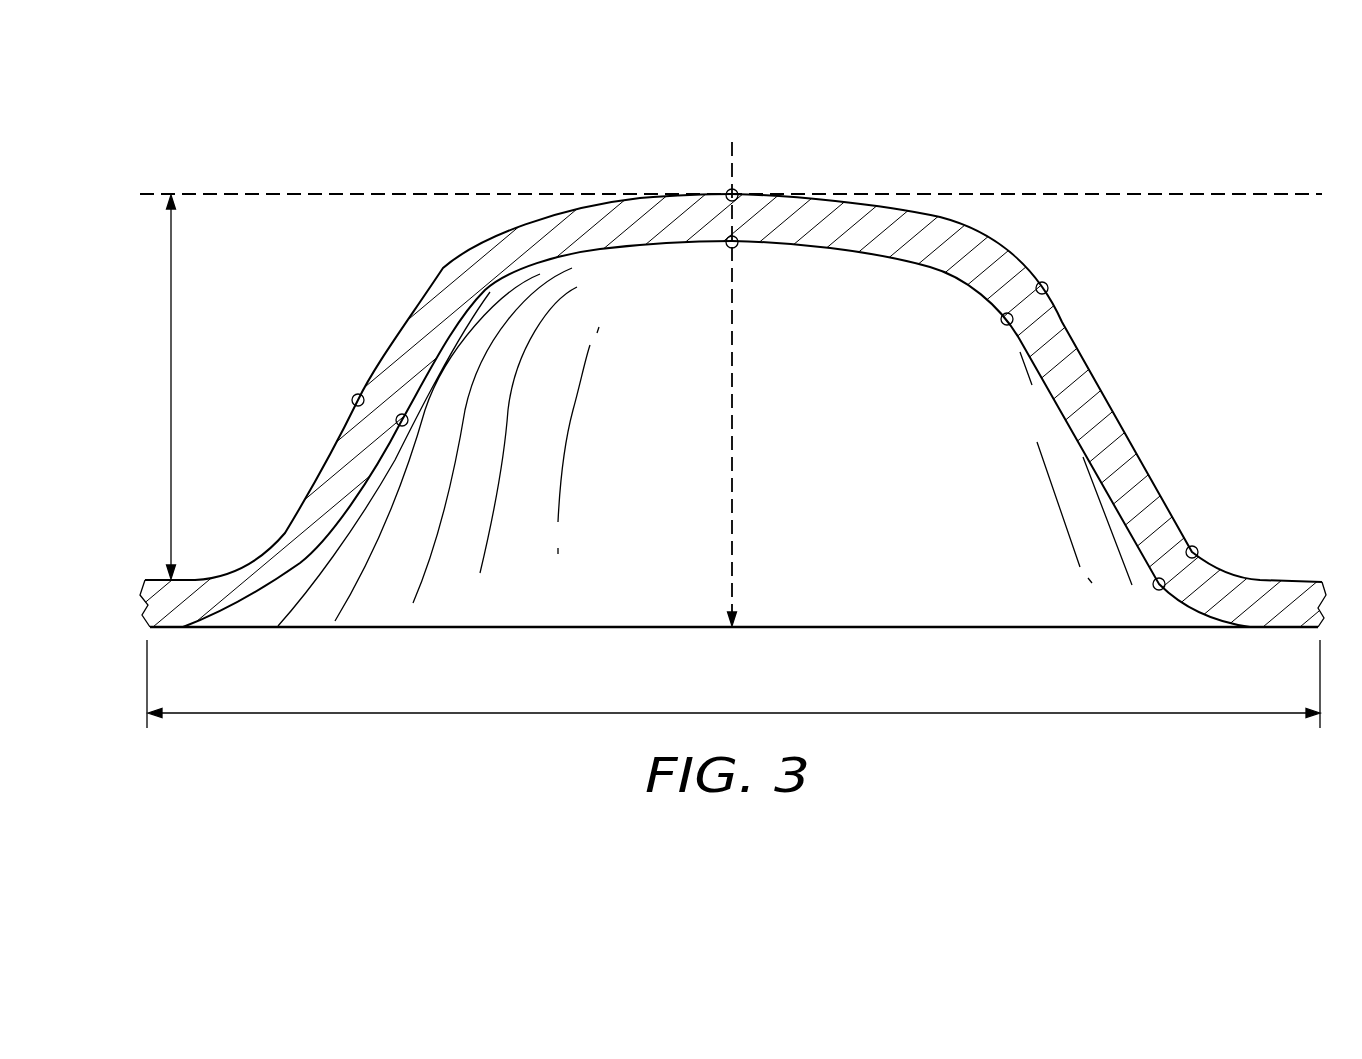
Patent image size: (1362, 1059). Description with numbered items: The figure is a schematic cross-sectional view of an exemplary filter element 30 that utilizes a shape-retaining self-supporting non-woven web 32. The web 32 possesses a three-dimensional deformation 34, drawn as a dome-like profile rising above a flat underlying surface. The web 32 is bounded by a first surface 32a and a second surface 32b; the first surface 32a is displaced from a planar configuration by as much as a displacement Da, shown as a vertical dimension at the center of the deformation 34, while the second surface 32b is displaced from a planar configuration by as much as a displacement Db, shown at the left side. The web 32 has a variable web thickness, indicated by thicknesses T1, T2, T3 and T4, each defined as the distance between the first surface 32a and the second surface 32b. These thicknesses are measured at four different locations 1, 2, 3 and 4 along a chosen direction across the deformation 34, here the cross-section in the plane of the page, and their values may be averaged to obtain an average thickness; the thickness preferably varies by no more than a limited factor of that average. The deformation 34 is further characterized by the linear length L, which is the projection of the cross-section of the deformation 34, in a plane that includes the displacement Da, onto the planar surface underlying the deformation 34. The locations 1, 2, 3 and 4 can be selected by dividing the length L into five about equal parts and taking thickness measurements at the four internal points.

The filter element 30 is at (681, 423).
The shape-retaining self-supporting non-woven web 32 is at (681, 423).
The first surface 32a is at (438, 342).
The second surface 32b is at (445, 267).
The three-dimensional deformation 34 is at (940, 167).
The location 1 is at (1118, 616).
The location 2 is at (968, 350).
The location 3 is at (738, 240).
The location 4 is at (450, 440).
The web thickness T1 is at (1210, 541).
The web thickness T2 is at (1062, 276).
The web thickness T3 is at (733, 155).
The web thickness T4 is at (337, 392).
The displacement Da' Da is at (748, 440).
The displacement Db' Db is at (170, 380).
The linear length L' L is at (758, 707).